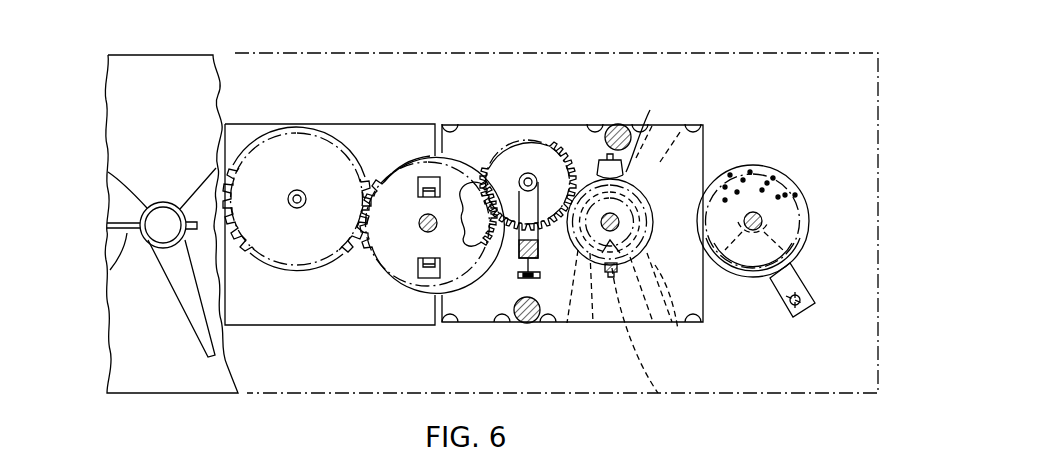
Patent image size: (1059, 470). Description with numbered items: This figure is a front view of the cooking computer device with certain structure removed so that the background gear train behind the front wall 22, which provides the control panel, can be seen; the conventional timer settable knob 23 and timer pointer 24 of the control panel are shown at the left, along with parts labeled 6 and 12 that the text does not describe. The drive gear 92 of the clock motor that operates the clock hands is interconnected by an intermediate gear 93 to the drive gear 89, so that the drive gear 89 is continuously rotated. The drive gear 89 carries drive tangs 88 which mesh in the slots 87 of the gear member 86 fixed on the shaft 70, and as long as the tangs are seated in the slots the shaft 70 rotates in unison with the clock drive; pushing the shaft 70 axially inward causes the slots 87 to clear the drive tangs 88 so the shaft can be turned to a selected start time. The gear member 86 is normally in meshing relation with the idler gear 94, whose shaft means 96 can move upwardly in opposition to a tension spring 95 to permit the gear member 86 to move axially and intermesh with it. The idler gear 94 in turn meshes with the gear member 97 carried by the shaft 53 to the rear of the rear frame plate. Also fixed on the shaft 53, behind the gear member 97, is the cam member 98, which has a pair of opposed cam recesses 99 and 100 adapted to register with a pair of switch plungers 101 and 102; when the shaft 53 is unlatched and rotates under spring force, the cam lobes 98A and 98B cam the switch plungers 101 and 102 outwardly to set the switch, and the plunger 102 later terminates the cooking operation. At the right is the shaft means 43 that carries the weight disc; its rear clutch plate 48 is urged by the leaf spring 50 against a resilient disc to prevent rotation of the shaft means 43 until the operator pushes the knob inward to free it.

The housing 6 is at (171, 312).
The panel 12 is at (163, 143).
The front wall 22 is at (800, 67).
The timer settable knob 23 is at (108, 172).
The timer pointer 24 is at (107, 273).
The shaft means 43 is at (758, 218).
The rear clutch plate 48 is at (809, 207).
The leaf spring 50 is at (800, 272).
The shaft 53 is at (618, 220).
The shaft 70 is at (420, 228).
The gear member 86 is at (470, 177).
The slots 87 is at (427, 280).
The drive tangs 88 is at (422, 280).
The drive gear 89 is at (400, 163).
The drive gear 92 is at (240, 162).
The intermediate gear 93 is at (300, 140).
The idler gear 94 is at (518, 140).
The tension spring 95 is at (520, 238).
The shaft means 96 is at (530, 173).
The gear member 97 is at (582, 257).
The cam member 98 is at (692, 275).
The cam lobe 98A is at (700, 140).
The cam lobe 98B is at (672, 325).
The cam recess 99 is at (570, 328).
The cam recess 100 is at (655, 128).
The switch plunger 101 is at (658, 400).
The switch plunger 102 is at (650, 110).